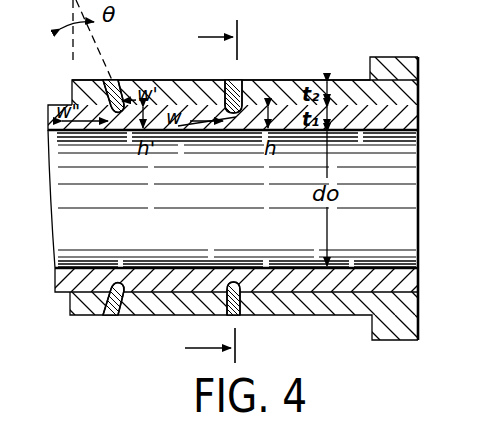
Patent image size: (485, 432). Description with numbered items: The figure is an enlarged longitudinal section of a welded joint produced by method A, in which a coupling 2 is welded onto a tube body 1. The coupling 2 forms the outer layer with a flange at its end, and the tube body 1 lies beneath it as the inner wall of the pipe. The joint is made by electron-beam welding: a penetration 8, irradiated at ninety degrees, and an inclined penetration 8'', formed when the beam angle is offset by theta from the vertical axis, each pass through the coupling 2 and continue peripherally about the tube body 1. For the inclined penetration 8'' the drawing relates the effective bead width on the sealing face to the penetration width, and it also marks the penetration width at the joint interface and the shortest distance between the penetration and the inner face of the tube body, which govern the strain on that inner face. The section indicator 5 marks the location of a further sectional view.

The tube body 1 is at (418, 120).
The coupling 2 is at (418, 75).
The penetration 8 is at (246, 190).
The penetration 8'' is at (126, 188).
The section line 5- 5 is at (195, 195).